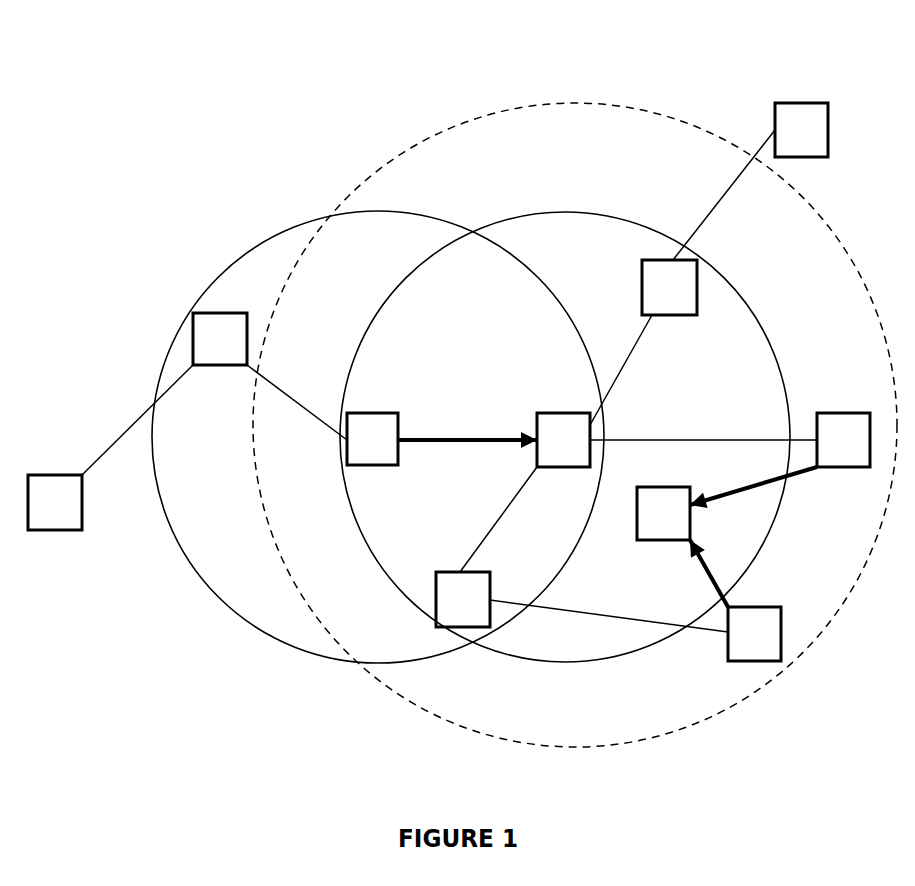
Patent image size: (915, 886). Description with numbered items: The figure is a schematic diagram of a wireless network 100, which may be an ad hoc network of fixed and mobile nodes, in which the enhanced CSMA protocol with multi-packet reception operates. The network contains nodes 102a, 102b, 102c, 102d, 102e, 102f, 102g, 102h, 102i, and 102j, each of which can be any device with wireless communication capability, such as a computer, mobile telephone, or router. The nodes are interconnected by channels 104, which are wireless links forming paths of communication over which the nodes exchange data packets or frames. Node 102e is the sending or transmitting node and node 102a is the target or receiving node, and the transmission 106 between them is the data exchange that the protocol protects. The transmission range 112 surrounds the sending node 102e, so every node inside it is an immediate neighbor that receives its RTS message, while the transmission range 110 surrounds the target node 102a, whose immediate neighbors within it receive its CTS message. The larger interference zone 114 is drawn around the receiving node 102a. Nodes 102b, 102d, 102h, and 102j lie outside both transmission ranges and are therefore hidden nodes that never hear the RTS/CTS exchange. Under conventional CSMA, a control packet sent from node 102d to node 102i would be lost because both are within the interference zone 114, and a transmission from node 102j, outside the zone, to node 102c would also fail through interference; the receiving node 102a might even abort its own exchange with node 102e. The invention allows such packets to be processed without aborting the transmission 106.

The wireless network 100 is at (475, 33).
The target node 102a is at (567, 413).
The node 102b is at (838, 413).
The node 102c is at (673, 260).
The node 102d is at (747, 662).
The sending node 102e is at (350, 413).
The node 102f is at (475, 572).
The node 102g is at (215, 313).
The node 102h is at (82, 490).
The node 102i is at (637, 503).
The node 102j is at (807, 103).
The channel 104 is at (449, 381).
The transmission 106 is at (466, 444).
The transmission range 110 is at (562, 662).
The transmission range 112 is at (232, 607).
The interference zone 114 is at (445, 130).